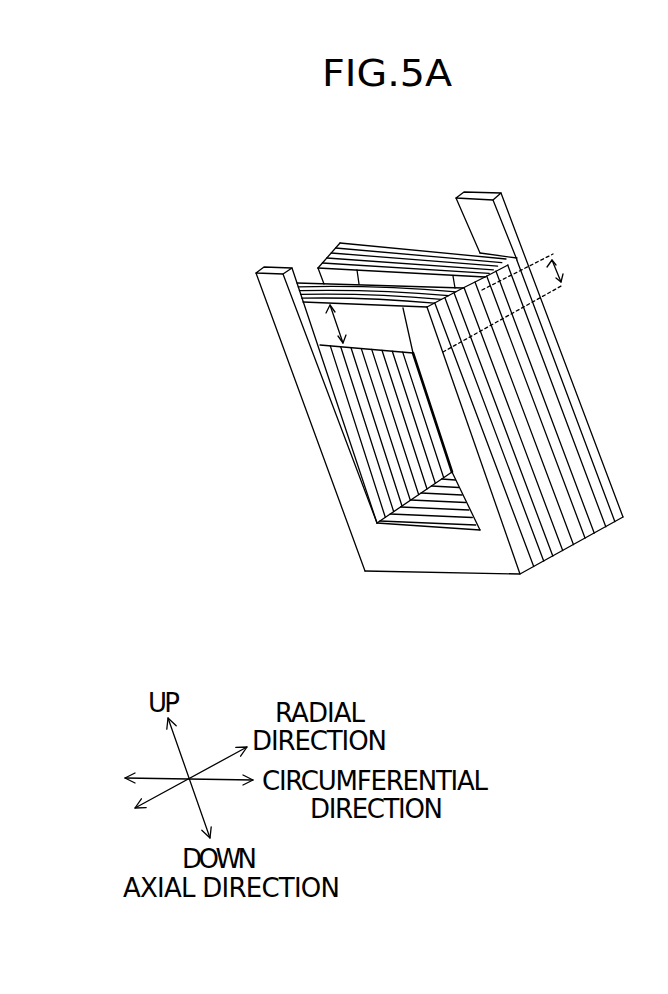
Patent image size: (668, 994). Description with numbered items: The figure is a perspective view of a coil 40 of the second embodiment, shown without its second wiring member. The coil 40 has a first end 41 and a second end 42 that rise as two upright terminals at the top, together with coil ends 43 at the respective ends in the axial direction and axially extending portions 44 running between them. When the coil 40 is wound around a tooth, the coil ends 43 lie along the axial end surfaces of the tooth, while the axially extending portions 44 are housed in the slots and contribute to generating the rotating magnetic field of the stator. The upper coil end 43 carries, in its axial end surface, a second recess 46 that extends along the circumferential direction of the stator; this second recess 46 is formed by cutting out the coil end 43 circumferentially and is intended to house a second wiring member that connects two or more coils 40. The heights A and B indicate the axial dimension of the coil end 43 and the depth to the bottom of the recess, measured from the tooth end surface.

The coil 40 is at (277, 188).
The first end 41 is at (257, 263).
The second end 42 is at (484, 187).
The coil end 43 is at (365, 237).
The axially extending portion 44 is at (578, 373).
The second recess 46 is at (410, 275).